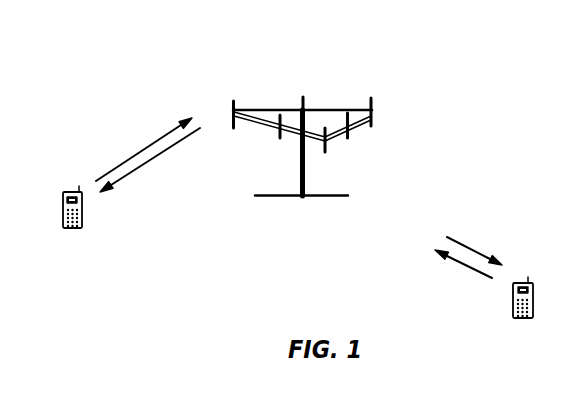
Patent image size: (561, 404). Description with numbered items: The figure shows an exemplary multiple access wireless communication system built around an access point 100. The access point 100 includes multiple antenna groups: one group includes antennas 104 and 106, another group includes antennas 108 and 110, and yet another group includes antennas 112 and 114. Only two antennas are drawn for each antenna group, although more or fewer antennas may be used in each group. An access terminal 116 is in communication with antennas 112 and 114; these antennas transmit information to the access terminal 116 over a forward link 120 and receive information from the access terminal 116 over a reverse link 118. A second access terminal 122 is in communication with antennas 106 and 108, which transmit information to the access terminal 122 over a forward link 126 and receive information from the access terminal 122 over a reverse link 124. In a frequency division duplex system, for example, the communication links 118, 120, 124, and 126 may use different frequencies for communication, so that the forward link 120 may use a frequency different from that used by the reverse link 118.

The access point 100 is at (290, 197).
The antenna 104 is at (325, 152).
The antenna 106 is at (349, 139).
The antenna 108 is at (375, 120).
The antenna 110 is at (303, 97).
The antenna 112 is at (236, 108).
The antenna 114 is at (280, 138).
The access terminal 116 is at (73, 191).
The reverse link 118 is at (143, 148).
The forward link 120 is at (155, 157).
The access terminal 122 is at (520, 282).
The reverse link 124 is at (453, 262).
The forward link 126 is at (473, 250).